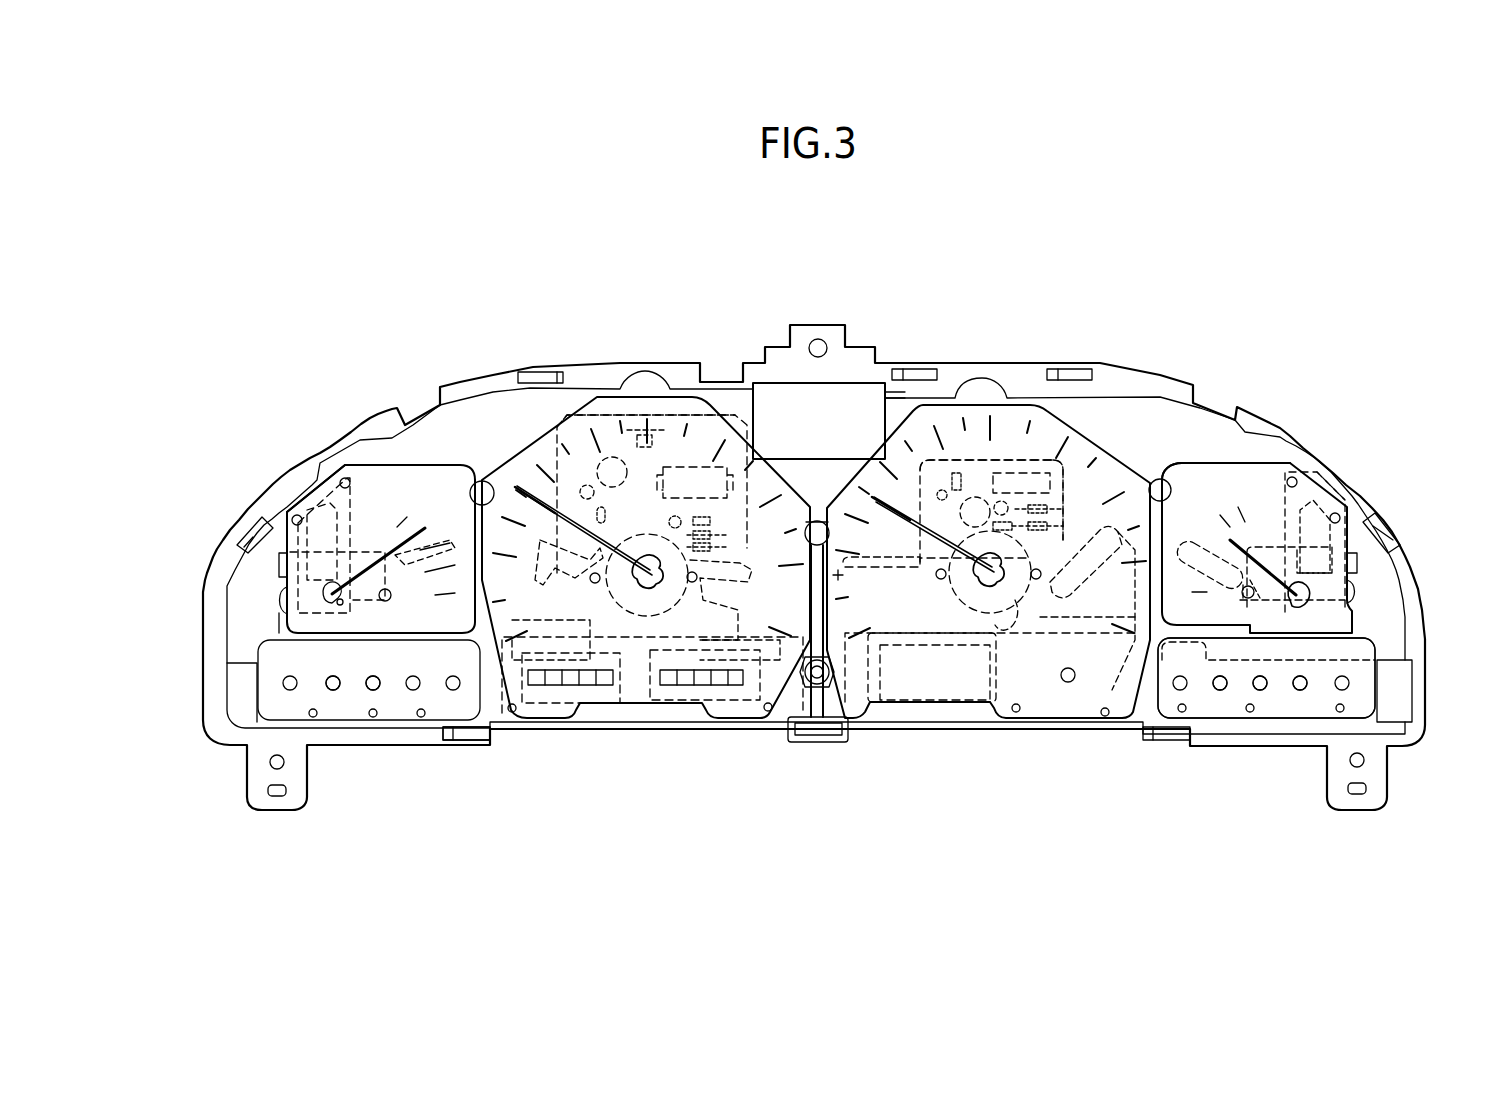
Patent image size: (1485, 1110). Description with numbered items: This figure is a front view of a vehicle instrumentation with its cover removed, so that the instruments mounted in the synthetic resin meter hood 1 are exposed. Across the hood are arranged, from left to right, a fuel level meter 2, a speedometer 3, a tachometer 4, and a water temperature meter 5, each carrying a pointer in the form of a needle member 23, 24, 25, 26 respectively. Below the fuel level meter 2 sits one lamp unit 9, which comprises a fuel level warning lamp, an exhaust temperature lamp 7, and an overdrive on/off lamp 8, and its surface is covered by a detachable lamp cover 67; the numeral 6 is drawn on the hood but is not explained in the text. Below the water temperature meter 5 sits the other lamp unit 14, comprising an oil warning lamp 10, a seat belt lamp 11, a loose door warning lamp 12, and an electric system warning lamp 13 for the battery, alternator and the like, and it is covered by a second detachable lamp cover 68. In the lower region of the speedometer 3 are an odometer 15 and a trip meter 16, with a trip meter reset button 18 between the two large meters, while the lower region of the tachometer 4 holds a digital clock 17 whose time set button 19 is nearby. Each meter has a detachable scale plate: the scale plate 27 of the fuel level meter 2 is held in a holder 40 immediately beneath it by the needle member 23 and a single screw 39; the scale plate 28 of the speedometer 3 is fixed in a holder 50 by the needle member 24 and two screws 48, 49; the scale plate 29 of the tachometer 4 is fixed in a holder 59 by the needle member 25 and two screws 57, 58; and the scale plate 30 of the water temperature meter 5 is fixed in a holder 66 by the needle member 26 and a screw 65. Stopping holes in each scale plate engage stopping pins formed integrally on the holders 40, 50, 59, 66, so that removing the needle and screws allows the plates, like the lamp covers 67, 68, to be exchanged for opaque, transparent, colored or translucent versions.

The meter hood 1 is at (1130, 364).
The fuel level meter 2 is at (414, 466).
The speedometer 3 is at (648, 391).
The tachometer 4 is at (985, 395).
The water temperature meter 5 is at (1246, 456).
The left mounting bracket 6 is at (222, 745).
The exhaust temperature lamp 7 is at (333, 690).
The overdrive on/off lamp 8 is at (372, 690).
The lamp unit 9 is at (413, 733).
The oil warning lamp 10 is at (1218, 690).
The seat belt lamp 11 is at (1258, 690).
The loose door warning lamp 12 is at (1300, 690).
The electric system warning lamp 13 is at (1350, 685).
The lamp unit 14 is at (1387, 646).
The odometer 15 is at (560, 686).
The trip meter 16 is at (690, 686).
The digital clock 17 is at (912, 686).
The trip meter reset button 18 is at (817, 684).
The time set button 19 is at (1068, 682).
The needle member 23 is at (397, 560).
The needle member 24 is at (528, 503).
The needle member 25 is at (890, 498).
The needle member 26 is at (1262, 535).
The scale plate 27 is at (392, 478).
The scale plate 28 is at (520, 447).
The scale plate 29 is at (1030, 420).
The scale plate 30 is at (1202, 462).
The screw 39 is at (390, 600).
The holder 40 is at (448, 512).
The screw 48 is at (590, 582).
The screw 49 is at (688, 582).
The holder 50 is at (745, 555).
The screw 57 is at (939, 580).
The screw 58 is at (1034, 580).
The holder 59 is at (1083, 560).
The screw 65 is at (1245, 600).
The holder 66 is at (1315, 533).
The lamp cover 67 is at (278, 712).
The lamp cover 68 is at (1313, 708).